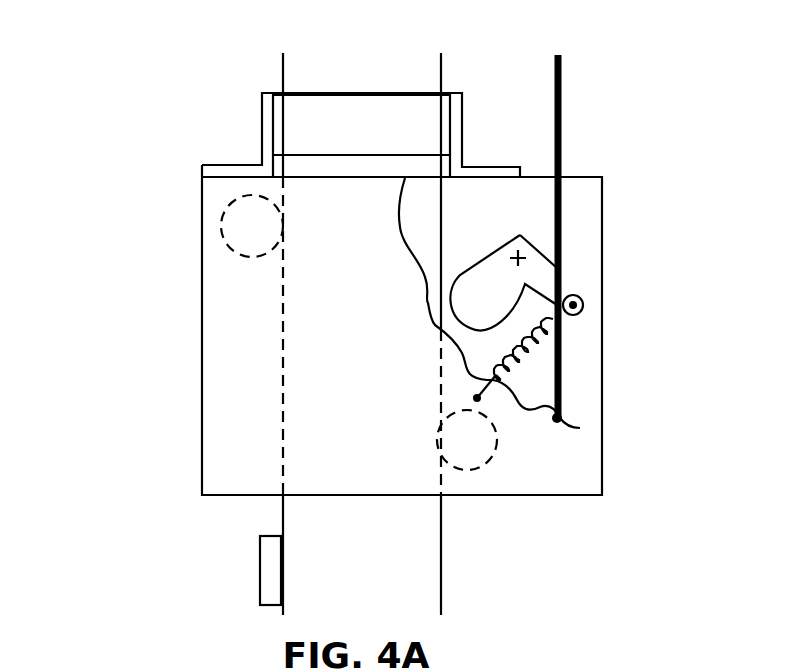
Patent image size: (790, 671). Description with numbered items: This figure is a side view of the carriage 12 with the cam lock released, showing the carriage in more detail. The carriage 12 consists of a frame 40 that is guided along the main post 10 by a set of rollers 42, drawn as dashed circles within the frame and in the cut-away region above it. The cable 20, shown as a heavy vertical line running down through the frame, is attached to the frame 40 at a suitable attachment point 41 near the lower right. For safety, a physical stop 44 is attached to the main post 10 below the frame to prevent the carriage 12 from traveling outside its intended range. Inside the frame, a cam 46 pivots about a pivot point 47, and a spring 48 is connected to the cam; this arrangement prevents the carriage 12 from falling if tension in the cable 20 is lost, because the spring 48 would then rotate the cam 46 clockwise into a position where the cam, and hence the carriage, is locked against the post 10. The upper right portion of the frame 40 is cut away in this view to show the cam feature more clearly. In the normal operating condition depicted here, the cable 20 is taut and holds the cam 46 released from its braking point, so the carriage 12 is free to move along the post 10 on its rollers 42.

The main post 10 is at (398, 334).
The carriage 12 is at (288, 307).
The cable 20 is at (596, 239).
The frame 40 is at (358, 330).
The attachment point 41 is at (531, 315).
The rollers 42 is at (340, 285).
The physical stops 44 is at (226, 570).
The cam 46 is at (606, 285).
The pivot point 47 is at (555, 265).
The spring 48 is at (572, 364).